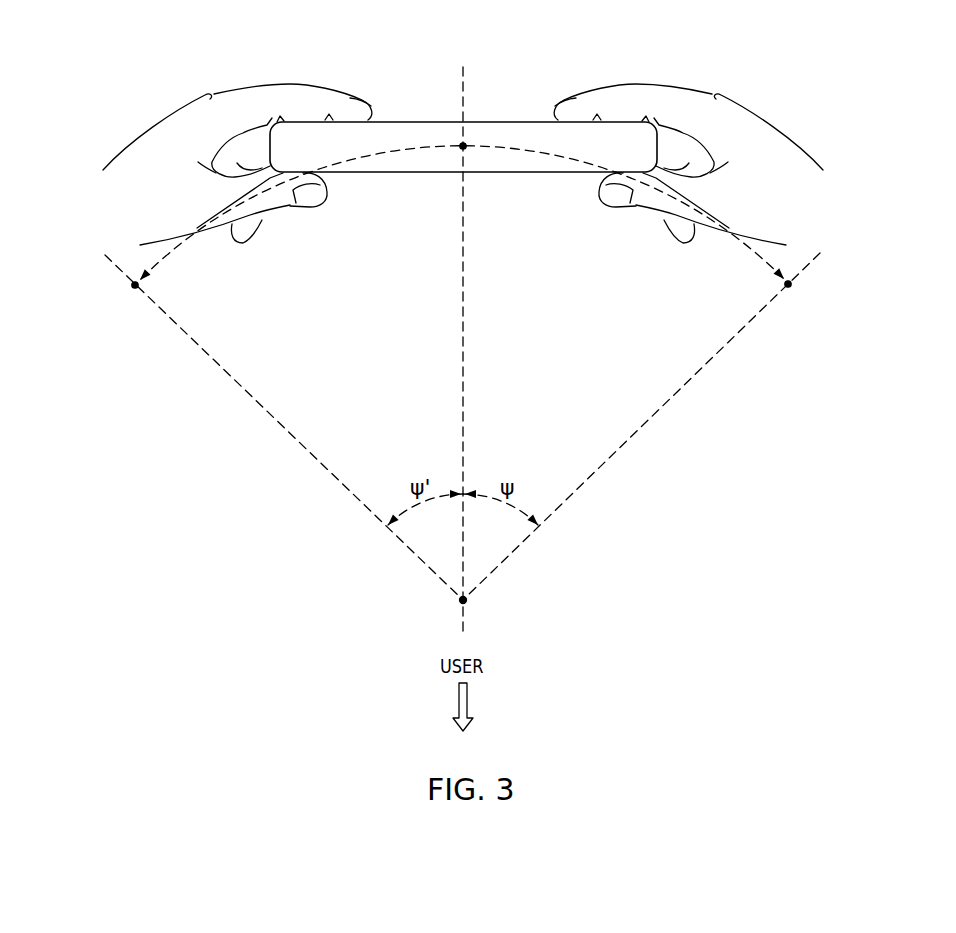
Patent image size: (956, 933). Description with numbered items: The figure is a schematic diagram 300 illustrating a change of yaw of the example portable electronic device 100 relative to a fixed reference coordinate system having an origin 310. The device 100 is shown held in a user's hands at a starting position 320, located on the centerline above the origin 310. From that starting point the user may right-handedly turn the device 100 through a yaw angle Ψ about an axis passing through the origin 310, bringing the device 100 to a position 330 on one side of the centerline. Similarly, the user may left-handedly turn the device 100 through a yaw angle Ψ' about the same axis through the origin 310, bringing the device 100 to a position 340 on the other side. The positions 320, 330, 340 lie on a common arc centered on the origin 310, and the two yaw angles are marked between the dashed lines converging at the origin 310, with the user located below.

The schematic diagram 300 is at (344, 40).
The portable electronic device 100 is at (501, 121).
The origin 310 is at (467, 600).
The position 320 is at (466, 149).
The position 330 is at (790, 288).
The position 340 is at (133, 289).